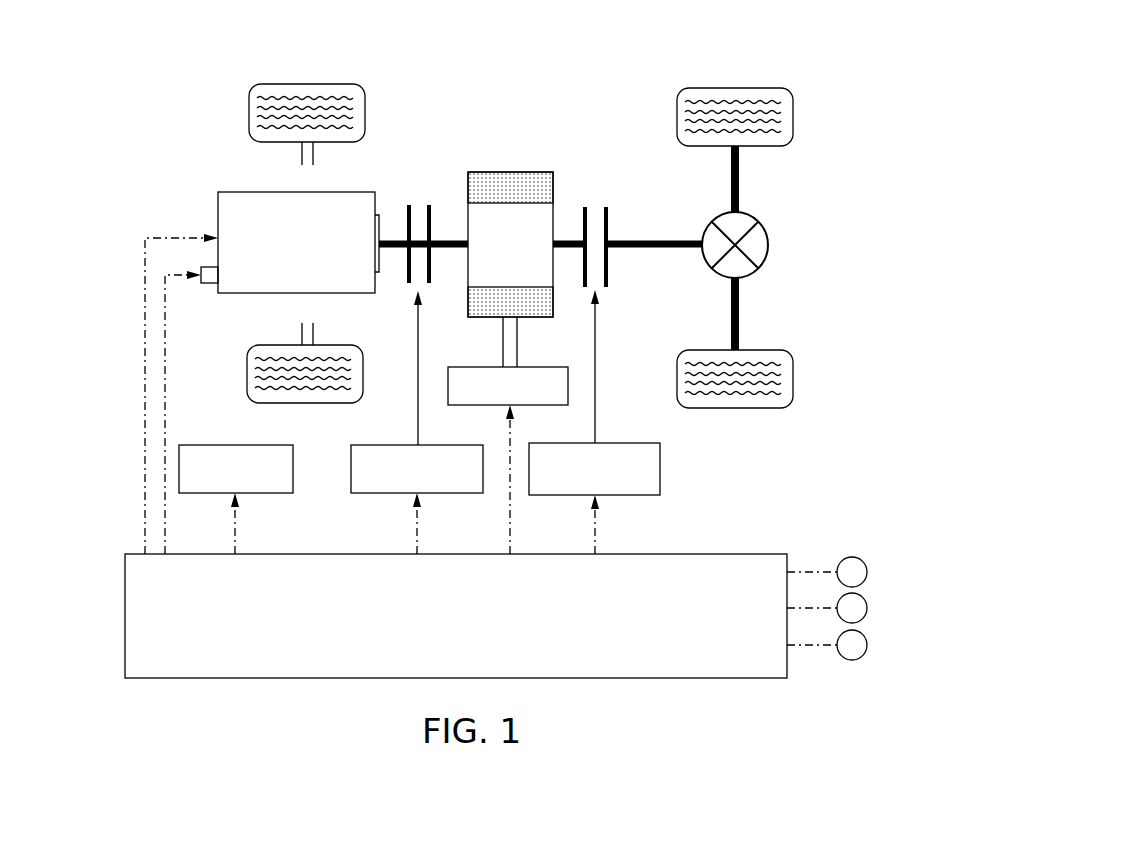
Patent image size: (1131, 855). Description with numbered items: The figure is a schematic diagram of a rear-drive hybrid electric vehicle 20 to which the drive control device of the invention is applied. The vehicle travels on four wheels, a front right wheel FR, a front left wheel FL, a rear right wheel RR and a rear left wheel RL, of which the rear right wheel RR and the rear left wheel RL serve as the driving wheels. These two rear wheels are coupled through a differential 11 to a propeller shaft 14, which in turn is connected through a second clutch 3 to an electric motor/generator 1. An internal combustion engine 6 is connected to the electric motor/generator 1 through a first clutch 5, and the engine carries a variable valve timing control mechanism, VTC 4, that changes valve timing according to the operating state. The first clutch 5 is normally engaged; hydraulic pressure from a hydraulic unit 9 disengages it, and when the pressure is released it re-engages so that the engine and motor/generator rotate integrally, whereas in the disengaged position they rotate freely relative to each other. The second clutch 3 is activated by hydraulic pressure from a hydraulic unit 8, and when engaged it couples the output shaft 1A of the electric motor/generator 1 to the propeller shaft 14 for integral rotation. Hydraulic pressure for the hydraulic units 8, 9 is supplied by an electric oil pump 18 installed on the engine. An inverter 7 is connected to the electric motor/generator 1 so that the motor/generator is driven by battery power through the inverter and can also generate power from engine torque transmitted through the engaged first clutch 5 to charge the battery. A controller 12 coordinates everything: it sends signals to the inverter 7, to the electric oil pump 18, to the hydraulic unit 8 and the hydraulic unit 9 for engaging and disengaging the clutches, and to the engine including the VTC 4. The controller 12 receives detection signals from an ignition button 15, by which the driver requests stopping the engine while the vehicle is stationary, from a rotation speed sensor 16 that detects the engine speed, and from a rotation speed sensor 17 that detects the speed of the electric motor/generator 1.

The hybrid electric vehicle 20 is at (436, 68).
The electric motor/generator 1 is at (525, 172).
The output shaft 1A is at (565, 240).
The second clutch 3 is at (608, 222).
The variable valve timing control mechanism 4 is at (215, 293).
The first clutch 5 is at (432, 205).
The internal combustion engine 6 is at (363, 192).
The inverter 7 is at (465, 367).
The hydraulic unit 8 is at (632, 443).
The hydraulic unit 9 is at (388, 445).
The differential 11 is at (769, 245).
The controller 12 is at (295, 554).
The propeller shaft 14 is at (673, 245).
The ignition button 15 is at (867, 572).
The rotation speed sensor 16 is at (867, 608).
The rotation speed sensor 17 is at (867, 645).
The electric oil pump 18 is at (234, 445).
The front right wheel FR is at (281, 84).
The front left wheel FL is at (310, 403).
The rear right wheel RR is at (768, 88).
The rear left wheel RL is at (756, 405).